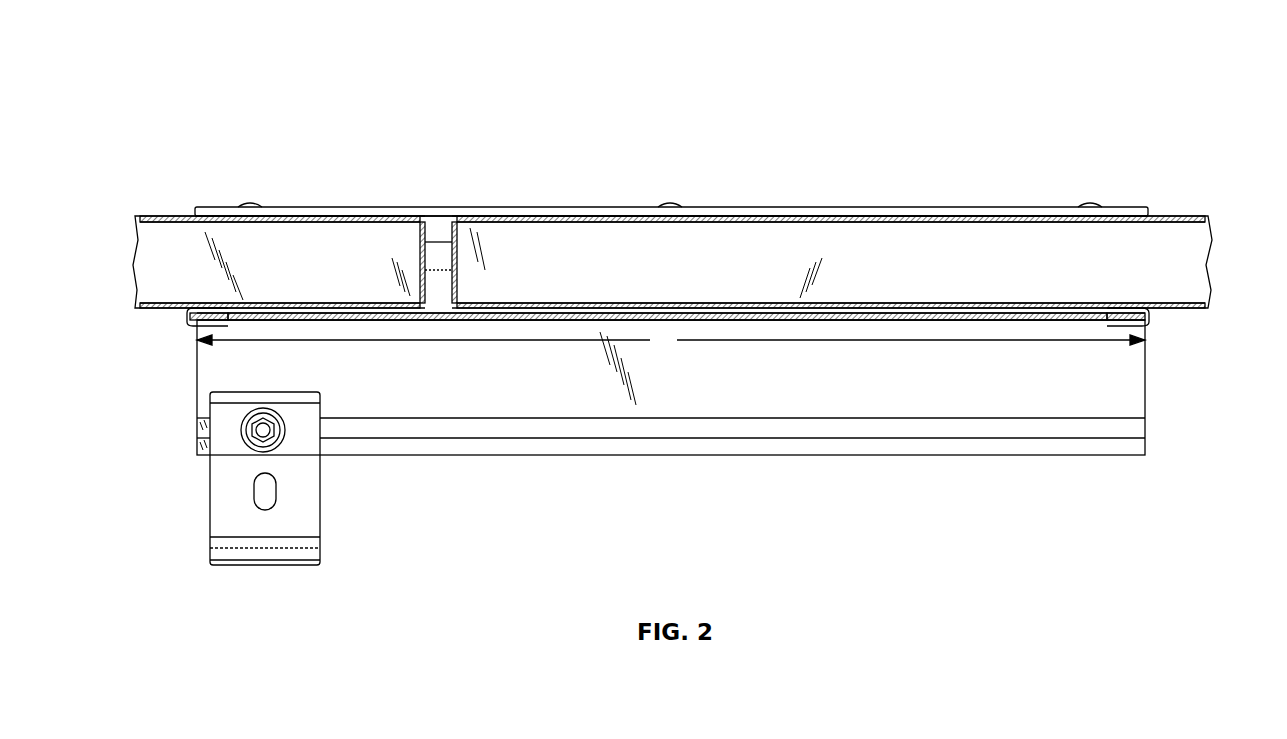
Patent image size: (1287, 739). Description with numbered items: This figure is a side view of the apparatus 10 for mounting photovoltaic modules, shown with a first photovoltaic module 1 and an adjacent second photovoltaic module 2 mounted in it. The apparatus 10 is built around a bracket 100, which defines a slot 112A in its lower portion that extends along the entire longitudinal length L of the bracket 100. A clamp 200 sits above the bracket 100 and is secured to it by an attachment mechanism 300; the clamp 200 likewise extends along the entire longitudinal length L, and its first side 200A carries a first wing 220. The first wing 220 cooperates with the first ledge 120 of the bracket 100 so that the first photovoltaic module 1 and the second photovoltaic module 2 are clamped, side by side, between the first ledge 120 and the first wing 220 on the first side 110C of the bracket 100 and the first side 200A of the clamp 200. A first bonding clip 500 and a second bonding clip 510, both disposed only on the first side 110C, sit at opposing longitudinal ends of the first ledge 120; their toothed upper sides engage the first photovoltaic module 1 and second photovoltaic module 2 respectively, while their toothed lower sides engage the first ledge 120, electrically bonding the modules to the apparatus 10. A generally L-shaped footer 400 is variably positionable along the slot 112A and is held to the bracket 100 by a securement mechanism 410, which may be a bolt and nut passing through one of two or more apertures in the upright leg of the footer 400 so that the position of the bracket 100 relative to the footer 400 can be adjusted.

The apparatus for mounting photovoltaic modules 10 is at (706, 118).
The first photovoltaic module 1 is at (349, 218).
The second photovoltaic module 2 is at (957, 218).
The clamp 200 is at (498, 192).
The first side of the clamp 200A is at (888, 190).
The first wing 220 is at (765, 214).
The attachment mechanism 300 is at (250, 205).
The bracket 100 is at (1135, 399).
The first side of the bracket 110C is at (725, 382).
The first ledge 120 is at (1004, 320).
The slot 112A is at (820, 428).
The first bonding clip 500 is at (190, 313).
The second bonding clip 510 is at (1152, 320).
The footer 400 is at (300, 502).
The securement mechanism 410 is at (258, 430).
The longitudinal length L is at (671, 344).